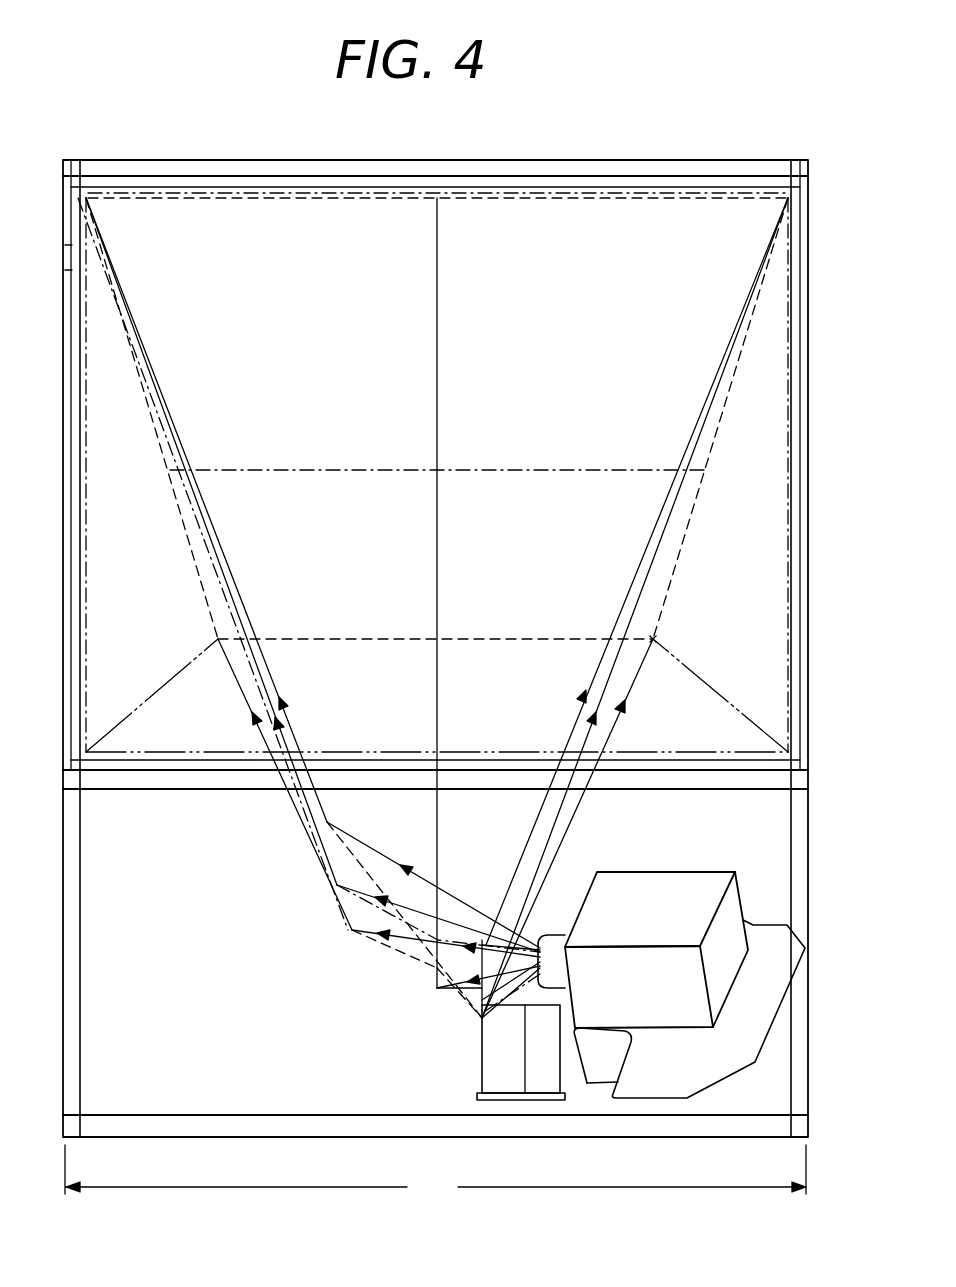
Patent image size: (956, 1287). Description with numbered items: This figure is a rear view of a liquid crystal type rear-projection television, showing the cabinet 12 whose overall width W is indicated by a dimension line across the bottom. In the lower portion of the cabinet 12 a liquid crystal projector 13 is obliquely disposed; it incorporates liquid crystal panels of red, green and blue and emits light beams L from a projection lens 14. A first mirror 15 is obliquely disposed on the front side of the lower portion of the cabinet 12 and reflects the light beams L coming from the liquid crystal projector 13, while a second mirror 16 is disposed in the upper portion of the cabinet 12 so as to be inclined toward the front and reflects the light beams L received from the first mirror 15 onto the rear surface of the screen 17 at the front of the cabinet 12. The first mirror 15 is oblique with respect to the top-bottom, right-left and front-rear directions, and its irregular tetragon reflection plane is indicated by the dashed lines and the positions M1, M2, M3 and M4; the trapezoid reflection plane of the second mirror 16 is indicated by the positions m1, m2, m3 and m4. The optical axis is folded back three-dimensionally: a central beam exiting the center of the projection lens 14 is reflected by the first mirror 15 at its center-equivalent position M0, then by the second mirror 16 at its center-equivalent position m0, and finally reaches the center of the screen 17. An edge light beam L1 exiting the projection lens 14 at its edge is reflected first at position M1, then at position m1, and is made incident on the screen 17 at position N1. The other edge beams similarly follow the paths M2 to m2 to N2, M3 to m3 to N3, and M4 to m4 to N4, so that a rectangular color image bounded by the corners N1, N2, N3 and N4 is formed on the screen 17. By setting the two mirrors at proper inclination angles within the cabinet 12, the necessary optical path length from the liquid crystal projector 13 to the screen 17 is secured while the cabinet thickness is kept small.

The cabinet 12 is at (808, 287).
The liquid crystal projector 13 is at (645, 872).
The projection lens 14 is at (552, 935).
The first mirror 15 is at (385, 954).
The second mirror 16 is at (727, 392).
The screen 17 is at (655, 752).
The screen incidence position N1 is at (82, 193).
The screen incidence position N2 is at (88, 749).
The screen incidence position N3 is at (786, 749).
The screen incidence position N4 is at (794, 193).
The center-equivalent position of second mirror m0 is at (438, 468).
The second mirror reflection position m1 is at (90, 200).
The second mirror reflection position m2 is at (216, 639).
The second mirror reflection position m3 is at (655, 639).
The second mirror reflection position m4 is at (786, 200).
The center-equivalent position of first mirror M0 is at (437, 968).
The first mirror reflection position M1 is at (328, 821).
The first mirror reflection position M2 is at (350, 930).
The first mirror reflection position M3 is at (482, 1018).
The first mirror reflection position M4 is at (482, 940).
The light beams L is at (450, 876).
The edge light beam L1 is at (220, 538).
The width of cabinet W is at (435, 1173).